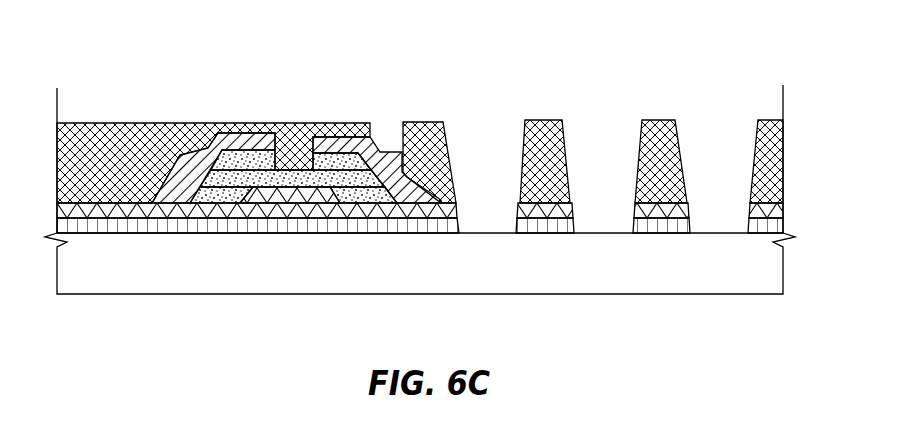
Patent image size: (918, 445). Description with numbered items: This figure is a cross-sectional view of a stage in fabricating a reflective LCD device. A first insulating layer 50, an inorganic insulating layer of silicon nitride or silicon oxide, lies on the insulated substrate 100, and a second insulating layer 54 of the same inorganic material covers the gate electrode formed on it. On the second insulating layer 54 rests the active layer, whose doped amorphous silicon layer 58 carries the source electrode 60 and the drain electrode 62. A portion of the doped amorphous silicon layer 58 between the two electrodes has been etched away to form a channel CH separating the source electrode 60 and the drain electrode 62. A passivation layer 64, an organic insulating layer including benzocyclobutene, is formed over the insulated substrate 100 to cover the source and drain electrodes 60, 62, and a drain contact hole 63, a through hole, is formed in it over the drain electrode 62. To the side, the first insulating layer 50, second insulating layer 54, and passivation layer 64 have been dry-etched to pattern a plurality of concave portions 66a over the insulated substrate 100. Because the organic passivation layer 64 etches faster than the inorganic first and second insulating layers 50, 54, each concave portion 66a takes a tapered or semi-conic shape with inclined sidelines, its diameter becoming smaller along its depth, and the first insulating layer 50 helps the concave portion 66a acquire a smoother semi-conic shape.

The insulated substrate 100 is at (440, 279).
The first insulating layer 50 is at (412, 223).
The second insulating layer 54 is at (368, 219).
The doped amorphous silicon layer 58 is at (240, 152).
The source electrode 60 is at (177, 123).
The drain electrode 62 is at (355, 137).
The passivation layer 64 is at (258, 136).
The drain contact hole 63 is at (392, 135).
The channel CH is at (293, 160).
The concave portions 66a is at (485, 156).